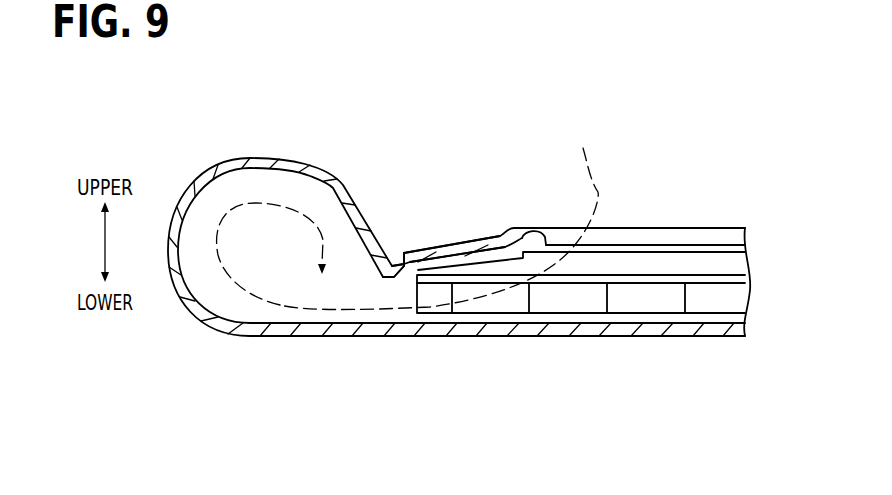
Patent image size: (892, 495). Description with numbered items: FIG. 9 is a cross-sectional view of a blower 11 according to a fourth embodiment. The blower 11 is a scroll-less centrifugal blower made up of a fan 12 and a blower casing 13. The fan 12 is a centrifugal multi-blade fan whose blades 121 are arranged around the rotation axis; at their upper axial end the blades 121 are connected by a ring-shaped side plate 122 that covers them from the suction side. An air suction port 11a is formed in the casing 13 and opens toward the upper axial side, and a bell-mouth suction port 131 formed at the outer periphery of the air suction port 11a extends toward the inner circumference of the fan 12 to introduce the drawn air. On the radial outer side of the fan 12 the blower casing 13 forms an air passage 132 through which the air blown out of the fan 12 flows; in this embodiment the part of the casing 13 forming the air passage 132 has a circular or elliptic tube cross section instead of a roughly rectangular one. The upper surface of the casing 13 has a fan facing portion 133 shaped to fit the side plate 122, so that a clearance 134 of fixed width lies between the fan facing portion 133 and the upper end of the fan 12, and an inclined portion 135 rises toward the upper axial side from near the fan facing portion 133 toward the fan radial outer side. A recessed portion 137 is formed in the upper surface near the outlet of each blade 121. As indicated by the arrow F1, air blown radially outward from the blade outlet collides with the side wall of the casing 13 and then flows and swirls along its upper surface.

The blower 11 is at (230, 128).
The air suction port 11a is at (645, 233).
The fan 12 is at (715, 219).
The blades 121 is at (560, 300).
The side plate 122 is at (668, 263).
The blower casing 13 is at (161, 282).
The suction port 131 is at (549, 242).
The air passage 132 is at (233, 306).
The fan facing portion 133 is at (470, 261).
The clearance 134 is at (445, 262).
The inclined portion 135 is at (389, 262).
The recessed portion 137 is at (397, 266).
The arrow F1 is at (439, 218).